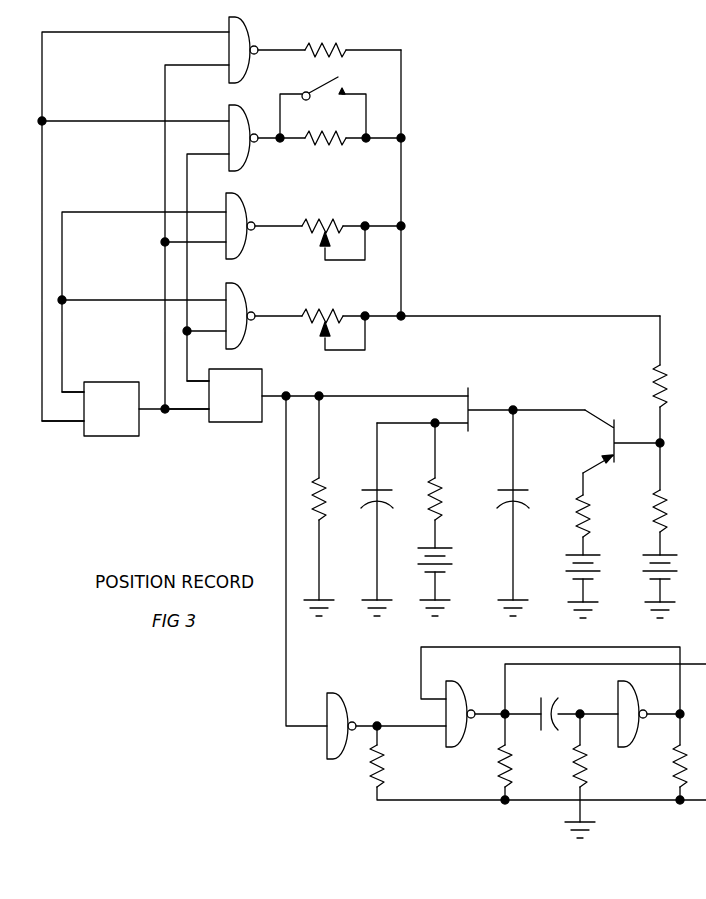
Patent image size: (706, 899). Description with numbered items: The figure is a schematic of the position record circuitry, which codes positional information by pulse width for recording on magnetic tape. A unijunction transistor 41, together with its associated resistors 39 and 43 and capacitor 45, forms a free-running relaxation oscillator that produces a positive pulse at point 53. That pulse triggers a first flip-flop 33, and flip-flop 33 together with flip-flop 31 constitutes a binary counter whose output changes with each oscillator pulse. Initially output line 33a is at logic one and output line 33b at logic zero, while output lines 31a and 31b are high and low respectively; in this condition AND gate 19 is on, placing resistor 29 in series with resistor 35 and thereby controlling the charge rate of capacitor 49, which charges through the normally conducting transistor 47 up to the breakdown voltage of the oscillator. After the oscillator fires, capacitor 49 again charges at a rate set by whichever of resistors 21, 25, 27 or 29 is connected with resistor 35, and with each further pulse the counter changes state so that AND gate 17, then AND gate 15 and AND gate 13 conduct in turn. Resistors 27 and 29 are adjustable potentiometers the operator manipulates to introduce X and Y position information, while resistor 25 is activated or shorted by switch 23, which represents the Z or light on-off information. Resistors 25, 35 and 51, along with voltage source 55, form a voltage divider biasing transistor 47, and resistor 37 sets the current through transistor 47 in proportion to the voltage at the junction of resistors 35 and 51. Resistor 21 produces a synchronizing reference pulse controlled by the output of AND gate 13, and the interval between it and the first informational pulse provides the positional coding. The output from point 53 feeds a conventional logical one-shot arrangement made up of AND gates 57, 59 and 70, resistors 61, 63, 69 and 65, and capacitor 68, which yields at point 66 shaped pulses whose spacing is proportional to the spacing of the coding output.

The AND gate 13 is at (247, 45).
The AND gate 15 is at (244, 133).
The AND gate 17 is at (243, 221).
The AND gate 19 is at (243, 310).
The resistor 21 is at (329, 40).
The switch 23 is at (323, 103).
The resistor 25 is at (329, 128).
The resistor 27 is at (328, 230).
The resistor 29 is at (457, 320).
The flip-flop 31 is at (111, 399).
The output line 31a is at (63, 402).
The output line 31b is at (63, 431).
The flip-flop 33 is at (235, 385).
The output line 33a is at (187, 391).
The output line 33b is at (187, 419).
The resistor 35 is at (672, 379).
The resistor 37 is at (587, 545).
The resistor 39 is at (440, 519).
The unijunction transistor 41 is at (481, 408).
The resistor 43 is at (326, 506).
The capacitor 45 is at (383, 519).
The transistor 47 is at (621, 441).
The capacitor 49 is at (518, 513).
The resistor 51 is at (669, 499).
The point 53 is at (290, 386).
The voltage source 55 is at (672, 584).
The AND gate 57 is at (386, 720).
The AND gate 59 is at (550, 697).
The resistor 61 is at (538, 763).
The resistor 63 is at (515, 759).
The resistor 65 is at (689, 759).
The point 66 is at (603, 691).
The capacitor 68 is at (579, 706).
The resistor 69 is at (586, 774).
The AND gate 70 is at (651, 709).